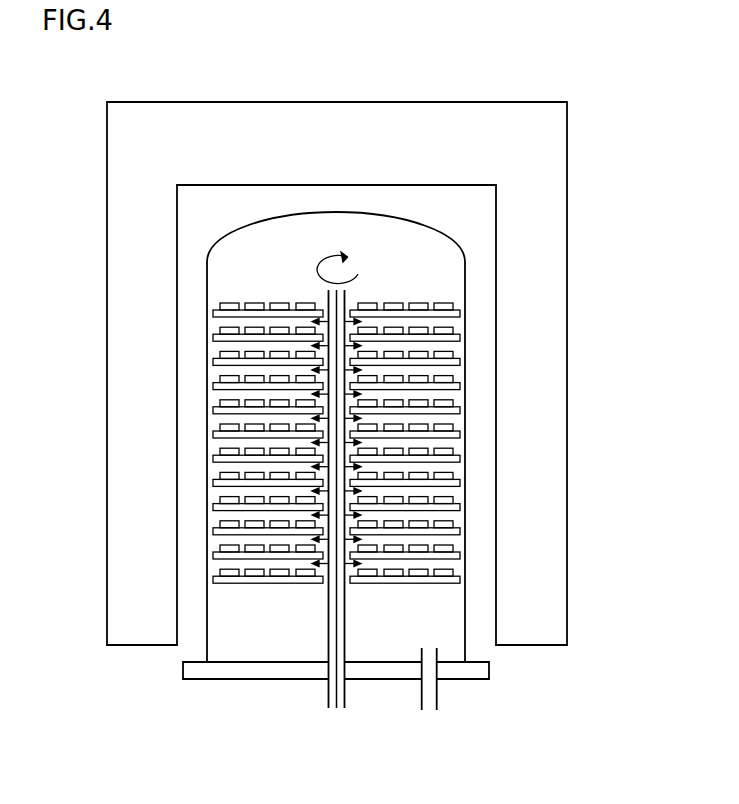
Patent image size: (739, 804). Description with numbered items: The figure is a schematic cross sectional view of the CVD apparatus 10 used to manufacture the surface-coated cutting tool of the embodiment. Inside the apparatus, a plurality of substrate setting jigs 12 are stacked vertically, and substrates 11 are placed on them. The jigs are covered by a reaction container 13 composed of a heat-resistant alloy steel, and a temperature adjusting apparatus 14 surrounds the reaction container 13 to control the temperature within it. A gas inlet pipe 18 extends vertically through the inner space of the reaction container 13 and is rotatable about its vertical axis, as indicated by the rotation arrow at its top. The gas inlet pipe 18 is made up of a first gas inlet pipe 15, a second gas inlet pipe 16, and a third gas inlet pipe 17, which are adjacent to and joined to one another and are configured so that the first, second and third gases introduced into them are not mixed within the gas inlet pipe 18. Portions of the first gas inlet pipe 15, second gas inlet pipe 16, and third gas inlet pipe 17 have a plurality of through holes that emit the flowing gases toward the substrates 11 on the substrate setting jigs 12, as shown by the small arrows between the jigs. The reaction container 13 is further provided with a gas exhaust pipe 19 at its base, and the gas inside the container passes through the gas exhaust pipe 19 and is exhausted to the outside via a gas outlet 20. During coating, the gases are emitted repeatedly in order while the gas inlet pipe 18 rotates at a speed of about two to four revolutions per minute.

The CVD apparatus 10 is at (532, 70).
The substrate 11 is at (460, 403).
The substrate setting jig 12 is at (460, 482).
The reaction container 13 is at (445, 230).
The temperature adjusting apparatus 14 is at (530, 138).
The first gas inlet pipe 15 is at (328, 710).
The second gas inlet pipe 16 is at (329, 690).
The third gas inlet pipe 17 is at (344, 710).
The gas inlet pipe 18 is at (347, 295).
The gas exhaust pipe 19 is at (437, 652).
The gas outlet 20 is at (429, 702).